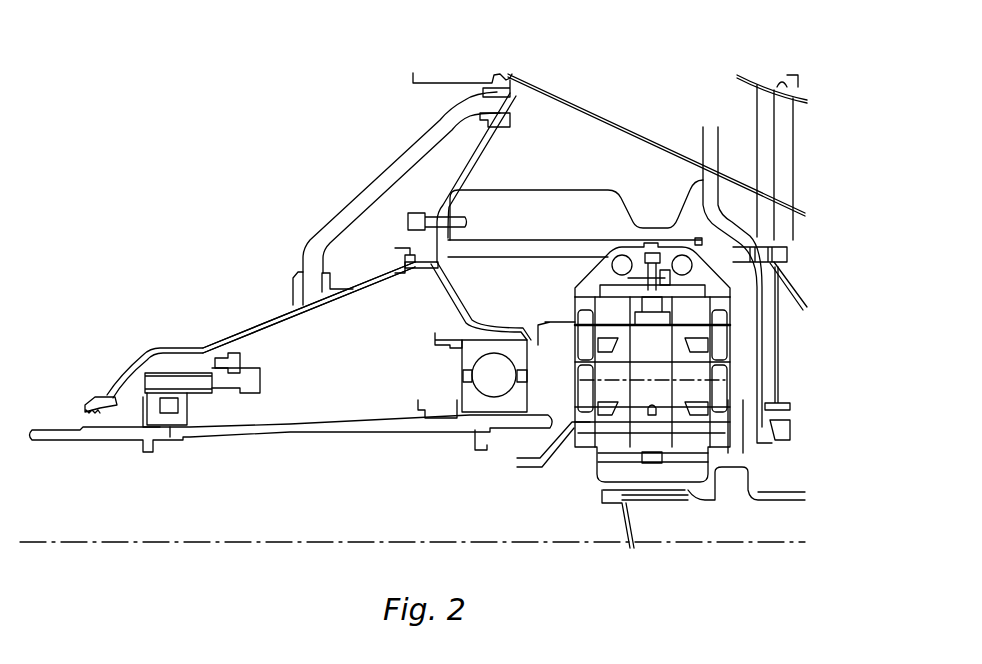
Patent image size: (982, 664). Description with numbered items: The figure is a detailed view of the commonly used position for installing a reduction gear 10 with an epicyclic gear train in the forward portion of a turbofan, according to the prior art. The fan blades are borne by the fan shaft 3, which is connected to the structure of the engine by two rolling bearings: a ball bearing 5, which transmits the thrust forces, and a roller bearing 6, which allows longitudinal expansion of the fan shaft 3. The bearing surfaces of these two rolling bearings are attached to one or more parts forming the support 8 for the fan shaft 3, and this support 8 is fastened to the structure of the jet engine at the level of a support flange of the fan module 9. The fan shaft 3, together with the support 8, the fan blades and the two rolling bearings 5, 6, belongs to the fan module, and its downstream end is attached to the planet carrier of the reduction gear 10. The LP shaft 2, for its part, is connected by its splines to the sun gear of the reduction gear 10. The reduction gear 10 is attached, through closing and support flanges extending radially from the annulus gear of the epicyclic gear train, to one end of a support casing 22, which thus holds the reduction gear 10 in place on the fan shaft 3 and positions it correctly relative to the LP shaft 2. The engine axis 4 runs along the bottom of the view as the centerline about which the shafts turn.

The LP shaft 2 is at (693, 495).
The fan shaft 3 is at (333, 430).
The engine axis 4 is at (197, 542).
The ball bearing 5 is at (477, 375).
The roller bearing 6 is at (187, 407).
The support 8 is at (371, 288).
The support flange of the fan module 9 is at (413, 235).
The reduction gear 10 is at (740, 368).
The support casing 22 is at (518, 255).